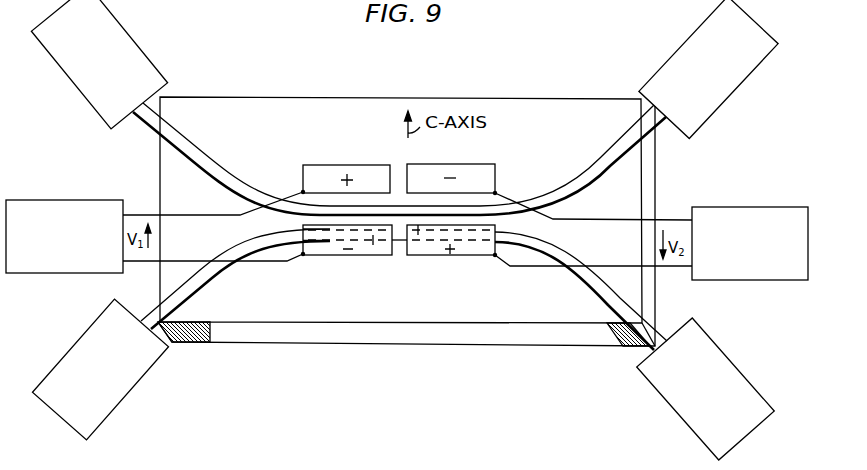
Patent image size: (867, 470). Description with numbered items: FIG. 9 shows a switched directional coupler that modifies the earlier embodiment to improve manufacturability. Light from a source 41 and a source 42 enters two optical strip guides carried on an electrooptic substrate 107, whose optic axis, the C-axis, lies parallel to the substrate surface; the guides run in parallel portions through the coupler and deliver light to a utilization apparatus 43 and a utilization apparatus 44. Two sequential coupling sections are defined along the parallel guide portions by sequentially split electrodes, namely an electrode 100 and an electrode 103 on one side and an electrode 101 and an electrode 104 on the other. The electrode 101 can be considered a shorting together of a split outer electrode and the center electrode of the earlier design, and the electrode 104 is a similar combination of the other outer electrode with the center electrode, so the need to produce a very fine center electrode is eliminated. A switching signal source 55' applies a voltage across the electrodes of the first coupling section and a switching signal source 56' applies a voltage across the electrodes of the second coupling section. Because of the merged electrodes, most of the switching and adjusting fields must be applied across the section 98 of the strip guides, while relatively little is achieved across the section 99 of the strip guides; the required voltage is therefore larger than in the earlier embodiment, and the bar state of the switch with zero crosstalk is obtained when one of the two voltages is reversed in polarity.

The source 41 is at (81, 94).
The source 42 is at (70, 347).
The utilization apparatus 43 is at (730, 96).
The utilization apparatus 44 is at (741, 370).
The switching signal source 55' is at (64, 218).
The switching signal source 56' is at (750, 224).
The section of the strip guides 98 is at (370, 208).
The section of the strip guides 99 is at (410, 257).
The electrode 100 is at (313, 164).
The electrode 101 is at (320, 256).
The electrode 103 is at (496, 177).
The electrode 104 is at (488, 256).
The substrate 107 is at (373, 124).